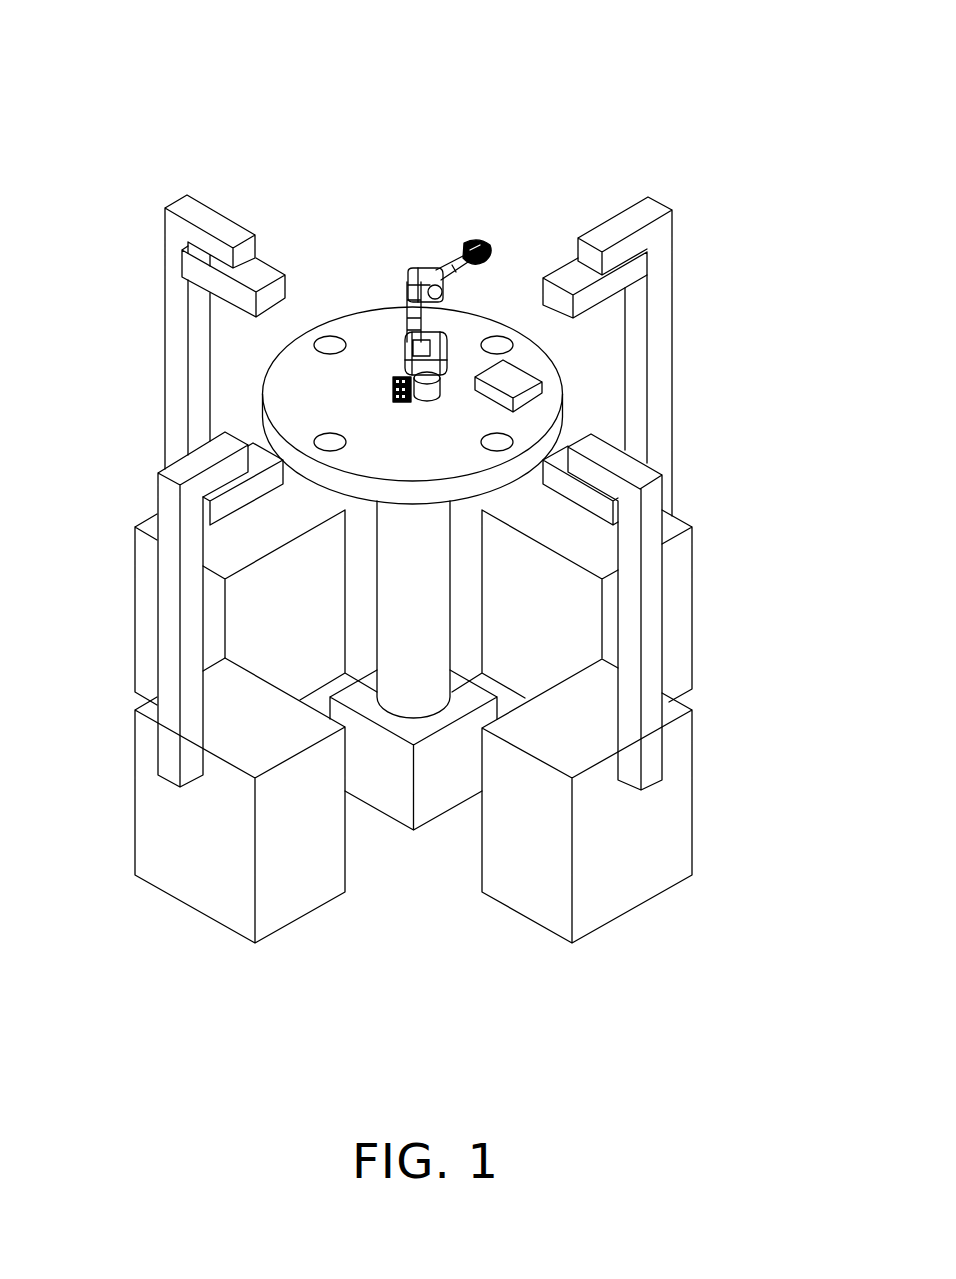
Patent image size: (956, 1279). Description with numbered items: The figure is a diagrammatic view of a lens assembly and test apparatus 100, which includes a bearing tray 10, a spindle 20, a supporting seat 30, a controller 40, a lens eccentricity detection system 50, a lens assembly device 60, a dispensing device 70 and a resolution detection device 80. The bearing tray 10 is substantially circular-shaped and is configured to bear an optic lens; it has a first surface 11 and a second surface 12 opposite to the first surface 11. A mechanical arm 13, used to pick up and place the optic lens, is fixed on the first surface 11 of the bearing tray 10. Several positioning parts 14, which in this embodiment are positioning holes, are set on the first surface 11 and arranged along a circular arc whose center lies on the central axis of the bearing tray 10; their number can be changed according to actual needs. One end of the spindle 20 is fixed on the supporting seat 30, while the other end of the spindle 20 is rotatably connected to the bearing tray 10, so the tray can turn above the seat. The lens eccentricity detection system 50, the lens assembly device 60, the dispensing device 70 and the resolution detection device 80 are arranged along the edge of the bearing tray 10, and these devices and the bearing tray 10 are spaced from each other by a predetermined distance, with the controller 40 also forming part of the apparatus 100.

The lens assembly and test apparatus 100 is at (420, 490).
The bearing tray 10 is at (393, 340).
The first surface 11 is at (378, 318).
The second surface 12 is at (480, 537).
The mechanical arm 13 is at (450, 262).
The positioning parts 14 is at (327, 347).
The spindle 20 is at (408, 677).
The supporting seat 30 is at (435, 790).
The controller 40 is at (518, 380).
The lens eccentricity detection system 50 is at (215, 216).
The lens assembly device 60 is at (623, 260).
The dispensing device 70 is at (634, 873).
The resolution detection device 80 is at (165, 750).